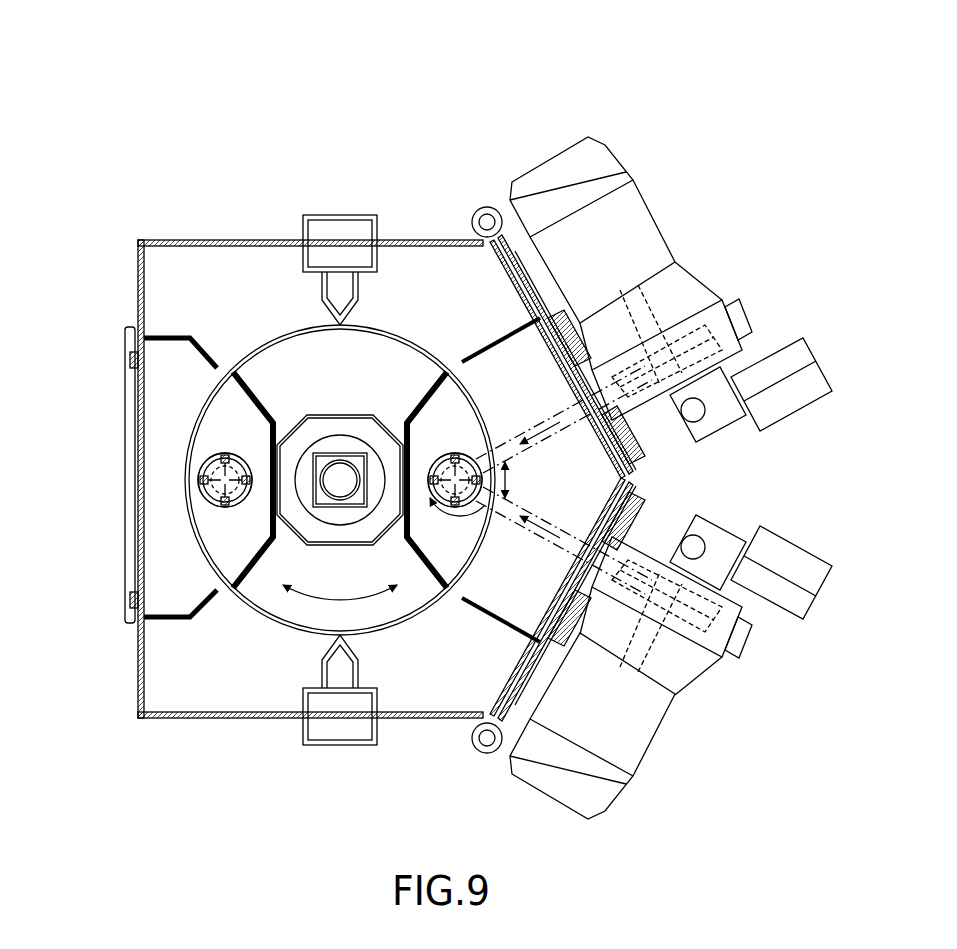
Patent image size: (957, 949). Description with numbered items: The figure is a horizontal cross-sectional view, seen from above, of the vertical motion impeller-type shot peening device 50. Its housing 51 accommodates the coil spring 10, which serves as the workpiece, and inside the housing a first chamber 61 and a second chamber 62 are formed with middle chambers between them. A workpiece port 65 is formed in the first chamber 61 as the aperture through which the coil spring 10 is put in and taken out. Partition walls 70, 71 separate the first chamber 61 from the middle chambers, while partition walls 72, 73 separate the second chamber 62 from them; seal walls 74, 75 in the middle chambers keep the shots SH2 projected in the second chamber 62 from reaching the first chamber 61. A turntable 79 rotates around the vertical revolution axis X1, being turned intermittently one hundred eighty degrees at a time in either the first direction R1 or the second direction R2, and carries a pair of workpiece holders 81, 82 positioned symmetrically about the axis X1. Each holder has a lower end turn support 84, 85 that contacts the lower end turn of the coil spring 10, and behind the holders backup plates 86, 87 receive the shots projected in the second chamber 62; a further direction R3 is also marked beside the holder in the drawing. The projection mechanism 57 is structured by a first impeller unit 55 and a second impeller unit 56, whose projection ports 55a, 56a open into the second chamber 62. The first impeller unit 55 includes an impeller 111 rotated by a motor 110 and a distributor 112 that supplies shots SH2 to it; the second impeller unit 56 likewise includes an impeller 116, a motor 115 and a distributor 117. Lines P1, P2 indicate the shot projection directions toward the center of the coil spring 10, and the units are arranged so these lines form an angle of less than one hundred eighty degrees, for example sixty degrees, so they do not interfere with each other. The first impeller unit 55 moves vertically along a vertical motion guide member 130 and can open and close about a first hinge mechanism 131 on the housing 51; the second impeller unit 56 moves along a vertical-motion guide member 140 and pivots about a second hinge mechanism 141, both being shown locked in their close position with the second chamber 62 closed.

The vertical motion impeller-type shot peening device 50 is at (510, 85).
The housing 51 is at (232, 240).
The first impeller unit 55 is at (670, 307).
The second impeller unit 56 is at (661, 648).
The projection mechanism 57 is at (785, 330).
The first chamber 61 is at (178, 410).
The second chamber 62 is at (480, 366).
The workpiece port 65 is at (125, 488).
The partition wall 70 is at (185, 336).
The partition wall 71 is at (185, 619).
The partition wall 72 is at (478, 345).
The partition wall 73 is at (472, 622).
The seal wall 74 is at (323, 306).
The seal wall 75 is at (323, 655).
The turntable 79 is at (382, 333).
The workpiece holder 81 is at (208, 496).
The workpiece holder 82 is at (462, 497).
The lower end turn support 84 is at (222, 458).
The lower end turn support 85 is at (455, 455).
The backup plate 86 is at (272, 422).
The backup plate 87 is at (410, 422).
The coil spring 10 is at (233, 455).
The motor 110 is at (640, 205).
The impeller 111 is at (740, 306).
The distributor 112 is at (725, 432).
The motor 115 is at (648, 752).
The impeller 116 is at (740, 638).
The distributor 117 is at (725, 540).
The vertical motion guide member 130 is at (660, 455).
The first hinge mechanism 131 is at (487, 207).
The vertical-motion guide member 140 is at (660, 497).
The second hinge mechanism 141 is at (487, 753).
The projection port 55a is at (566, 405).
The projection port 56a is at (558, 573).
The revolution axis X1 is at (340, 485).
The first direction R1 is at (411, 578).
The second direction R2 is at (320, 583).
The workpiece rotation direction R3 is at (446, 511).
The line P1 is at (548, 445).
The line P2 is at (550, 530).
The shots SH2 is at (538, 460).